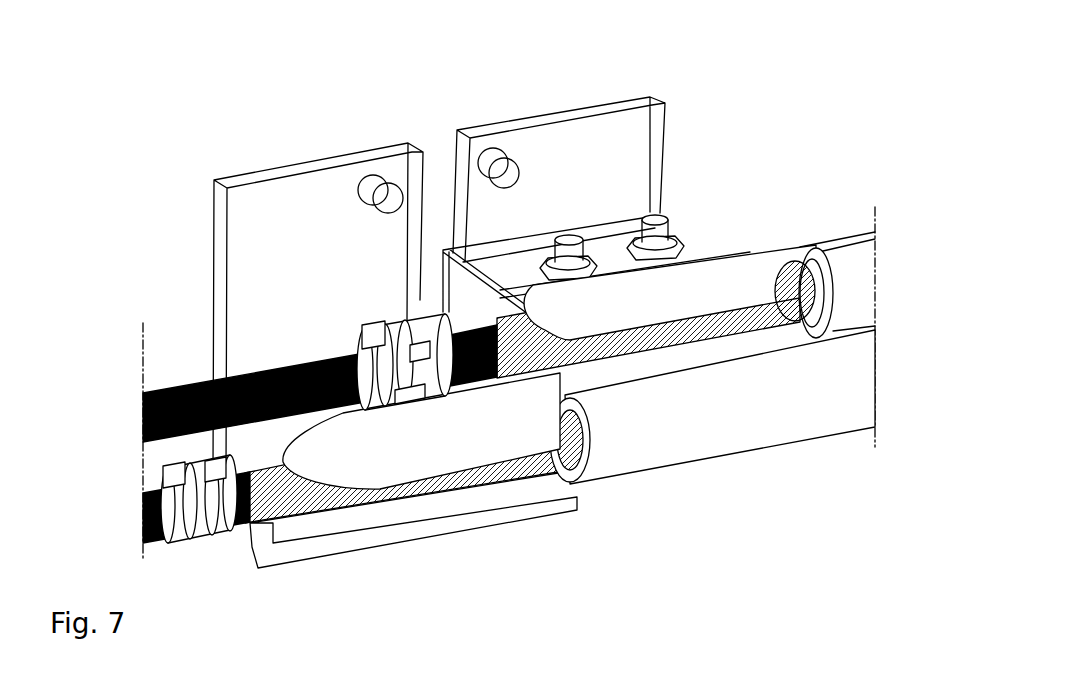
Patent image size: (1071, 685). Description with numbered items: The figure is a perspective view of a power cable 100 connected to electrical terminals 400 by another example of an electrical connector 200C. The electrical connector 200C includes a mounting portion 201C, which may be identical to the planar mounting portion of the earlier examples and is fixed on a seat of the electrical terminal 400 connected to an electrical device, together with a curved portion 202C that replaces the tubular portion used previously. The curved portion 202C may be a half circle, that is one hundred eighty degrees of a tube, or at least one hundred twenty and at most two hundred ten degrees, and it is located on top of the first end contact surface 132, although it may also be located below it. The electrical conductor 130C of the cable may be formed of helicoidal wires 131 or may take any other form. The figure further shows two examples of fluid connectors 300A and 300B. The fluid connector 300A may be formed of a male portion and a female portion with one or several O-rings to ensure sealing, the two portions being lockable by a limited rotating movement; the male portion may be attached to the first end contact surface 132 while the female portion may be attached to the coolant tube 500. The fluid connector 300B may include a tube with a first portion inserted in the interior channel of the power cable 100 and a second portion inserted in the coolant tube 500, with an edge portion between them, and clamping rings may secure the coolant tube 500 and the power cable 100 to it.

The power cable 100 is at (852, 205).
The electrical conductor 130C is at (637, 340).
The helicoidal wires 131 is at (553, 350).
The first end contact surface 132 is at (420, 537).
The electrical connector 200C is at (757, 183).
The mounting portion 201C is at (683, 253).
The curved portion 202C is at (743, 273).
The fluid connector 300A is at (380, 323).
The fluid connector 300B is at (203, 520).
The electrical terminal 400 is at (562, 100).
The coolant tube 500 is at (201, 375).